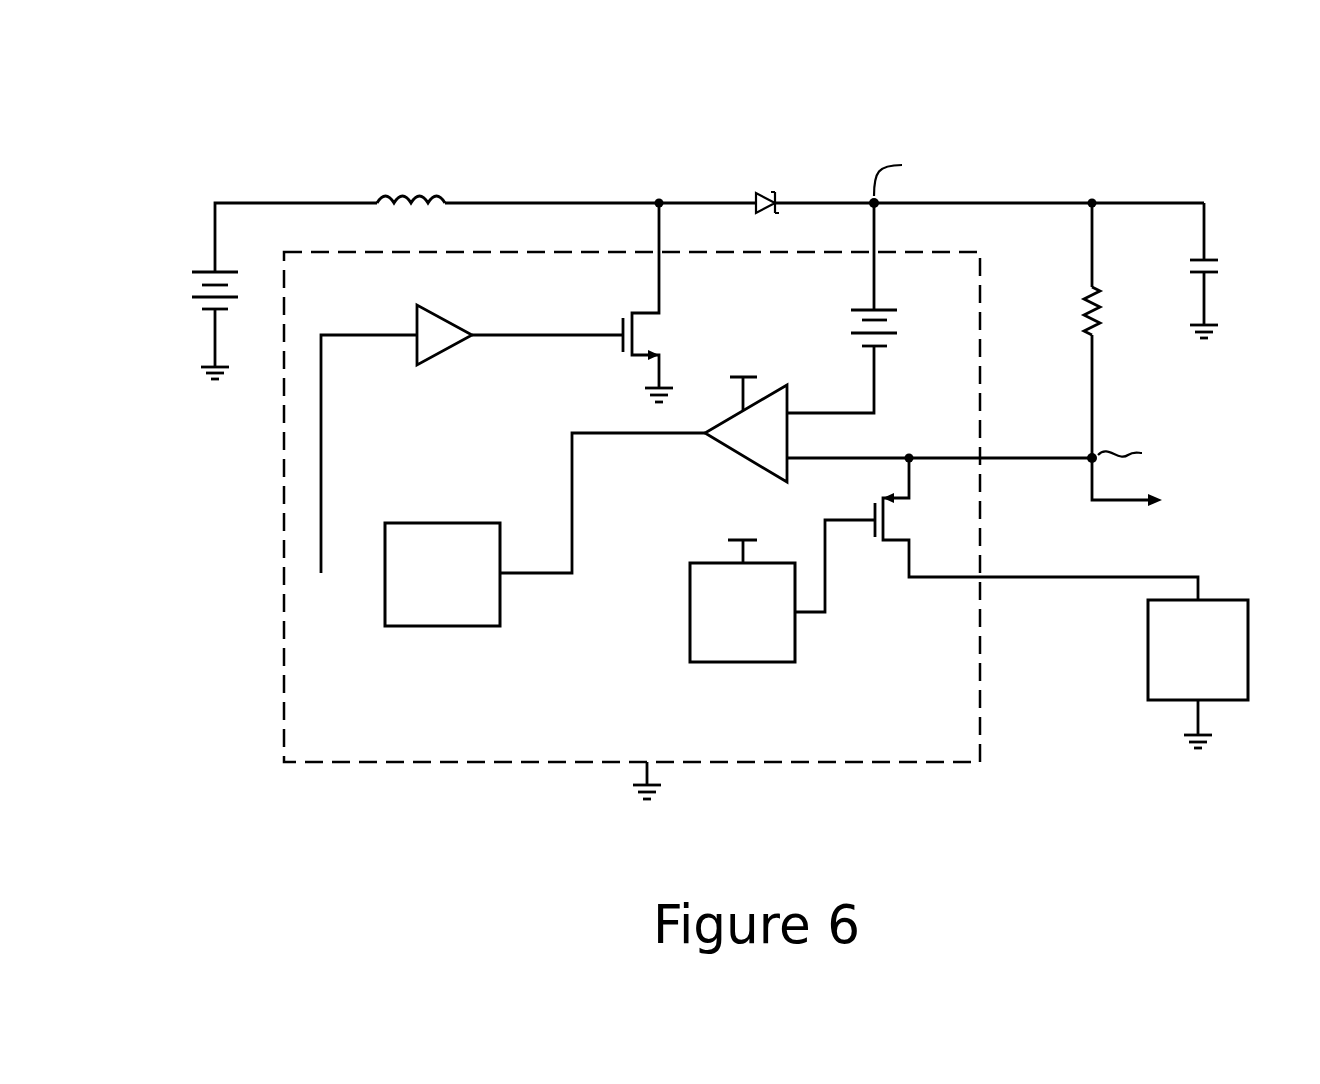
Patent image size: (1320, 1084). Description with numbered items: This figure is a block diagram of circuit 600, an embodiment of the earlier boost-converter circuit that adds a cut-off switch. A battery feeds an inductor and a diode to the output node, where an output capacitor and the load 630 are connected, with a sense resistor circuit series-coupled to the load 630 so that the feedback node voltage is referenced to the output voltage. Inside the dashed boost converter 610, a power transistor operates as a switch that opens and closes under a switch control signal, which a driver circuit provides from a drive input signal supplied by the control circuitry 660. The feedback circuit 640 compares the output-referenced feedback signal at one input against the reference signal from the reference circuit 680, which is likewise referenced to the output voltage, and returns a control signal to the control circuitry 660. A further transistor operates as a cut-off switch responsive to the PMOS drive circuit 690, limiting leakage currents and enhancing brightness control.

The circuit 600 is at (712, 64).
The boost converter 610 is at (877, 762).
The load 630 is at (1180, 677).
The feedback circuit 640 is at (722, 444).
The control circuitry 660 is at (442, 626).
The reference circuit 680 is at (852, 318).
The PMOS drive circuit 690 is at (690, 612).